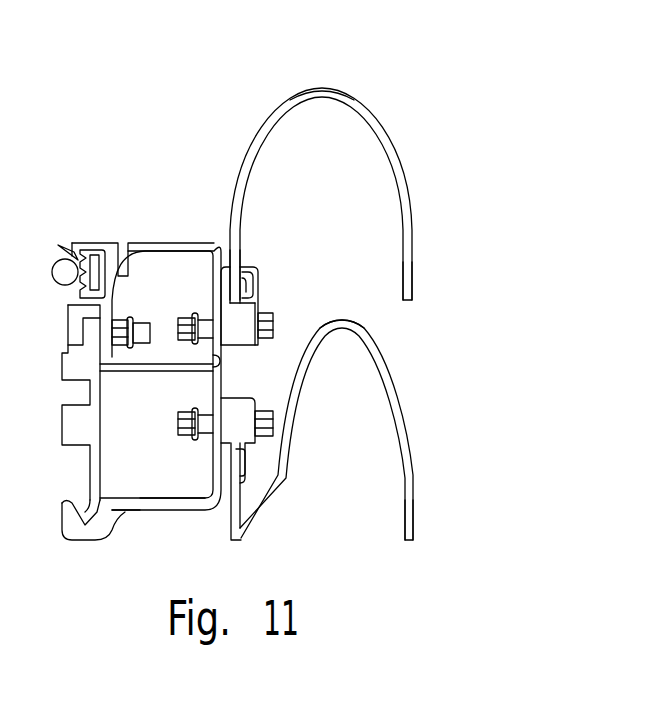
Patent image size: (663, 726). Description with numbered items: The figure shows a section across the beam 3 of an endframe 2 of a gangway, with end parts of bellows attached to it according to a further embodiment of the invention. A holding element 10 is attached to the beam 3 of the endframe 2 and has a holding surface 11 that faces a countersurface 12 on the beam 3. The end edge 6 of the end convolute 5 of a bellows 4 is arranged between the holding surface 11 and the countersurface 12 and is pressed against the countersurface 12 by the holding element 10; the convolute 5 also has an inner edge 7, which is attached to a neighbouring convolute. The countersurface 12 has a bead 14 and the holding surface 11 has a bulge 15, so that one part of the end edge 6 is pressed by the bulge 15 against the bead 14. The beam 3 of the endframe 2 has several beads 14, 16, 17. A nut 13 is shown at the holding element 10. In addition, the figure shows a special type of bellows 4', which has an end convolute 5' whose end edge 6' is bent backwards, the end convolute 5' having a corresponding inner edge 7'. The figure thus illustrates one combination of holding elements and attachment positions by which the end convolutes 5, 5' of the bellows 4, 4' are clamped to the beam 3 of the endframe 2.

The endframe 2 is at (66, 134).
The beam 3 is at (146, 245).
The bellows 4 is at (367, 191).
The end convolute 5 is at (328, 63).
The end edge 6 is at (281, 292).
The inner edge 7 is at (452, 277).
The holding element 10 is at (255, 345).
The holding surface 11 is at (255, 280).
The countersurface 12 is at (226, 262).
The nut 13 is at (272, 320).
The bead 14 is at (234, 262).
The bulge 15 is at (248, 266).
The bead 16 is at (212, 362).
The bead 17 is at (220, 484).
The end edge 6' is at (226, 505).
The bellows 4' is at (383, 430).
The end convolute 5' is at (349, 376).
The lower free end 7' is at (458, 514).